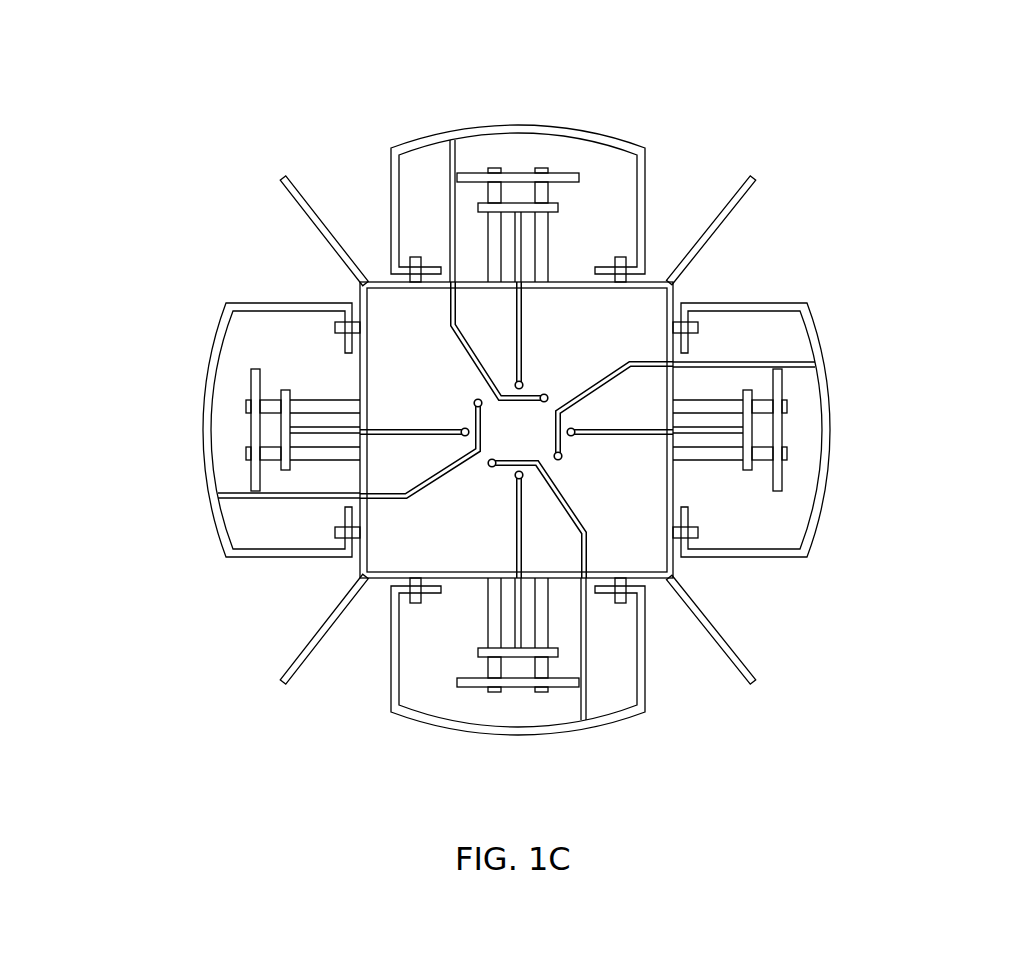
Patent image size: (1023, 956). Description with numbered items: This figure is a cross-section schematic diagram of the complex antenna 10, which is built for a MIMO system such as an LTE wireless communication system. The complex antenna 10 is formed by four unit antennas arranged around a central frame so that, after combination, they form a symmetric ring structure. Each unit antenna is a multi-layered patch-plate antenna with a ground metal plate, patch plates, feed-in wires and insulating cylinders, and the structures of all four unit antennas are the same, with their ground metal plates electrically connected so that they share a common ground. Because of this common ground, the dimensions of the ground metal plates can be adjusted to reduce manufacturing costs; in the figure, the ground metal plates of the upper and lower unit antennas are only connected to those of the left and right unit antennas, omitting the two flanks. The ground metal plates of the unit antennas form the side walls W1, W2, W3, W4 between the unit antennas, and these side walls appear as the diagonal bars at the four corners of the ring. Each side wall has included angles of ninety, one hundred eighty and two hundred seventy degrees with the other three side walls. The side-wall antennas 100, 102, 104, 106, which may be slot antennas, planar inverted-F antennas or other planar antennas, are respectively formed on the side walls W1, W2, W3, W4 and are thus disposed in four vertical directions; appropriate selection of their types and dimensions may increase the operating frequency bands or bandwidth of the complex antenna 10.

The complex antenna 10 is at (528, 433).
The side-wall antenna 100 is at (276, 203).
The side-wall antenna 102 is at (276, 657).
The side-wall antenna 104 is at (757, 657).
The side-wall antenna 106 is at (757, 203).
The side wall W1 is at (316, 219).
The side wall W2 is at (317, 642).
The side wall W3 is at (720, 640).
The side wall W4 is at (720, 219).